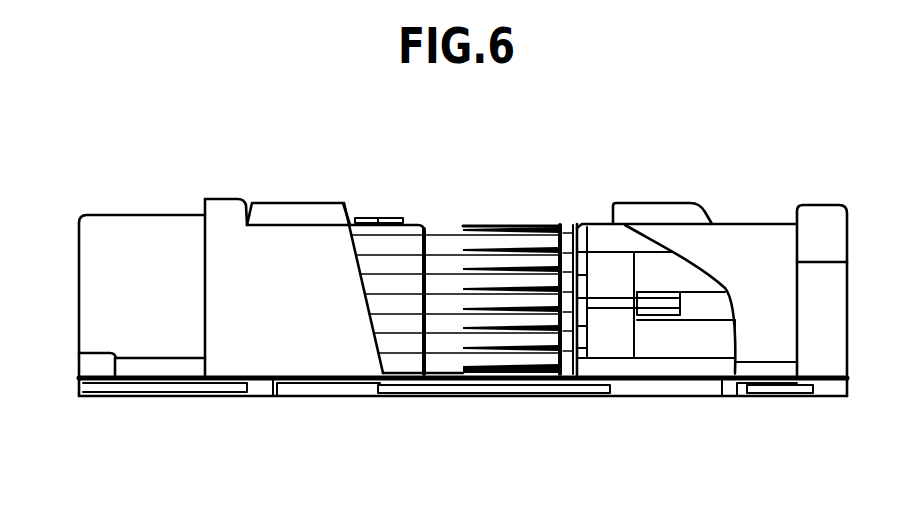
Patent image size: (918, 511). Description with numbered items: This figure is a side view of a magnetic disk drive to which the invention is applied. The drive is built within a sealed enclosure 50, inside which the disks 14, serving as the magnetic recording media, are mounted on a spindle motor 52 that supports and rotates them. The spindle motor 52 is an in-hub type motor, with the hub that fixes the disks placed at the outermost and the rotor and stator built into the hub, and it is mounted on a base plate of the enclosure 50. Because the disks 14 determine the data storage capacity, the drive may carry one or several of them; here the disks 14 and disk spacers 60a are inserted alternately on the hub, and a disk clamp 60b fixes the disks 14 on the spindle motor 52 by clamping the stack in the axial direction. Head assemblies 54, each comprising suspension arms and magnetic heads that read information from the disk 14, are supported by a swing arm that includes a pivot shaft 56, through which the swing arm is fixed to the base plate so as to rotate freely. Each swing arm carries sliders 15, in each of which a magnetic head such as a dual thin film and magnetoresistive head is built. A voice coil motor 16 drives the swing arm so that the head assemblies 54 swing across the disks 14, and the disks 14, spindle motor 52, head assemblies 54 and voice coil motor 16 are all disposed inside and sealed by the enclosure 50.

The disks 14 is at (437, 353).
The sliders 15 is at (474, 225).
The voice coil motor 16 is at (705, 312).
The sealed enclosure 50 is at (282, 227).
The spindle motor 52 is at (397, 363).
The head assemblies 54 is at (516, 225).
The pivot shaft 56 is at (612, 223).
The disk spacers 60a is at (405, 263).
The disk clamp 60b is at (368, 217).